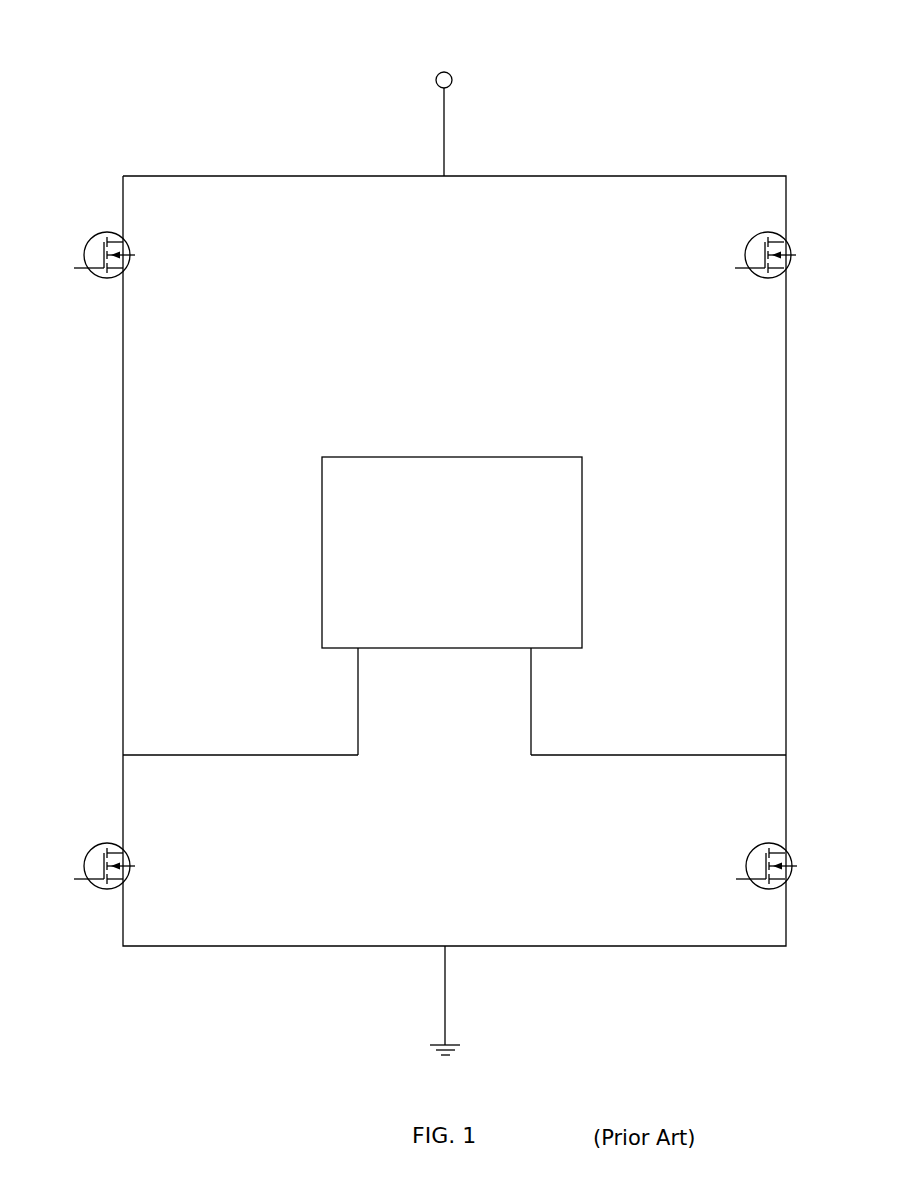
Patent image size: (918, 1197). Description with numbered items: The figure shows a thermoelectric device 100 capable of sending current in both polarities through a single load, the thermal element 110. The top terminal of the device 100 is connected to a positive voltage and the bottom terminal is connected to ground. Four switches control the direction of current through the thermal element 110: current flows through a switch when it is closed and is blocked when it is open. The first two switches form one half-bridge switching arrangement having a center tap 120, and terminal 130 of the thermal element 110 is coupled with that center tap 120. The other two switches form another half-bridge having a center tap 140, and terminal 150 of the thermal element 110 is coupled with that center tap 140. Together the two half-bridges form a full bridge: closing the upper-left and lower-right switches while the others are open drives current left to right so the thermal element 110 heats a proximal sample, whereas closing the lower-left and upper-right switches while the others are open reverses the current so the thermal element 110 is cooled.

The thermoelectric device 100 is at (170, 1028).
The thermal element 110 is at (452, 552).
The center tap 120 is at (123, 753).
The terminal 130 is at (358, 658).
The center tap 140 is at (786, 753).
The terminal 150 is at (531, 658).